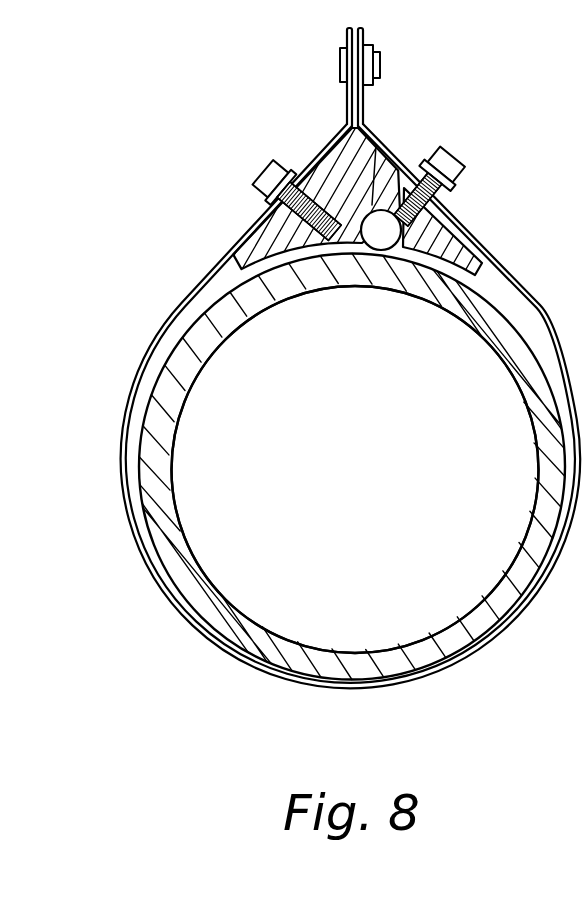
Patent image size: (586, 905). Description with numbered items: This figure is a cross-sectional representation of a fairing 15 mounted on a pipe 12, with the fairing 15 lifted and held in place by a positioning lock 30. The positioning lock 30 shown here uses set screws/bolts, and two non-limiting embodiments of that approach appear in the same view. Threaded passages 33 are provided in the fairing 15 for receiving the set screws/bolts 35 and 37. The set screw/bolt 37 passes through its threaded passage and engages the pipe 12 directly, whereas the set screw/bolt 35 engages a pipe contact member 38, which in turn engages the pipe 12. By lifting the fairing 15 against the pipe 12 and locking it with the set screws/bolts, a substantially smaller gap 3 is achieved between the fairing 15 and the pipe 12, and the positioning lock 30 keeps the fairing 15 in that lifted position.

The gap 3 is at (352, 684).
The pipe 12 is at (218, 340).
The fairing 15 is at (375, 142).
The positioning lock 30 is at (234, 130).
The threaded passages 33 is at (262, 208).
The set screw/bolt 35 is at (467, 172).
The set screw/bolt 37 is at (266, 186).
The pipe contact member 38 is at (382, 235).